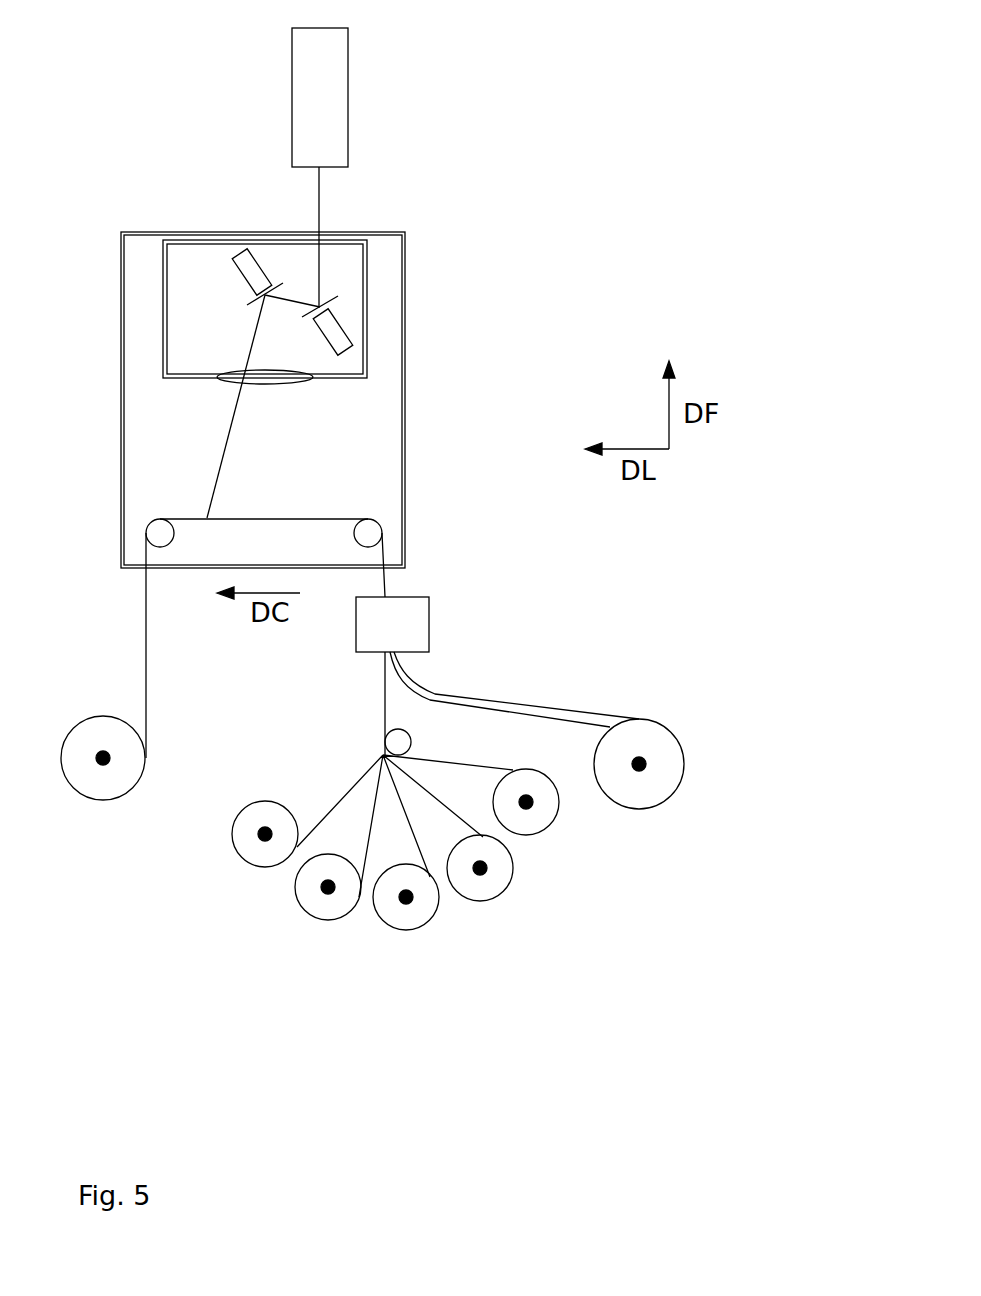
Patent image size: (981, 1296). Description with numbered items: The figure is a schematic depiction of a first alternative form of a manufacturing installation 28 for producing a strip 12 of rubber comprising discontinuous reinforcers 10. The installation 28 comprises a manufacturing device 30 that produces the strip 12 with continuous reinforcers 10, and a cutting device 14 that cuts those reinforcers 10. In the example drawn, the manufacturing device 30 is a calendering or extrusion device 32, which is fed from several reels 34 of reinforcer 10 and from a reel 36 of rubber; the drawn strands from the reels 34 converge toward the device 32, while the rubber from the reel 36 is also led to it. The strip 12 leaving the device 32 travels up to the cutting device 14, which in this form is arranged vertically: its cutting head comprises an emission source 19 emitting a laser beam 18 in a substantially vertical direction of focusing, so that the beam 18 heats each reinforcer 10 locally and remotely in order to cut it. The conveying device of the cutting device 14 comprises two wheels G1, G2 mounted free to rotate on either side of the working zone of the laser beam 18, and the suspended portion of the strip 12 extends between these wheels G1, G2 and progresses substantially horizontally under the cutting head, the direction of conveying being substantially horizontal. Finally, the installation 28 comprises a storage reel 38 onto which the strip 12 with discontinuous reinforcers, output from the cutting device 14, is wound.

The reinforcers 10 is at (385, 700).
The strip 12 is at (316, 494).
The cutting device 14 is at (488, 296).
The laser beam 18 is at (229, 440).
The emission source 19 is at (346, 67).
The manufacturing installation 28 is at (594, 94).
The manufacturing device 30 is at (602, 614).
The calendering or extrusion device 32 is at (429, 623).
The reels of reinforcer 34 is at (252, 855).
The reel of rubber 36 is at (634, 790).
The storage reel 38 is at (85, 785).
The wheel G1 is at (375, 527).
The wheel G2 is at (156, 524).